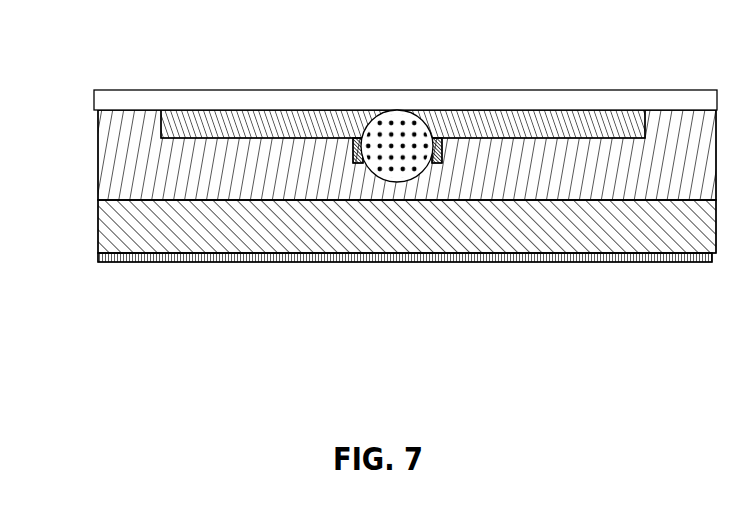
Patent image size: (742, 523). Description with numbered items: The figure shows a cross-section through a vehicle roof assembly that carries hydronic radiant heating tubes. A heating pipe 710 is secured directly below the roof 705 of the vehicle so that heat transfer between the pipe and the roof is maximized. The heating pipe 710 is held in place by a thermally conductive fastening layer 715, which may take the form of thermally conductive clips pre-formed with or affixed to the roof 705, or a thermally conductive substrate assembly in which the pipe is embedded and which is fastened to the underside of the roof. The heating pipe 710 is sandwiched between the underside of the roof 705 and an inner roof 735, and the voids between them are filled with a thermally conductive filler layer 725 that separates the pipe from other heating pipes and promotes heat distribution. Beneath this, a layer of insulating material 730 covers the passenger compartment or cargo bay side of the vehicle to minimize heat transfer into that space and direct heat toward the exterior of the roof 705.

The roof 705 is at (107, 90).
The heating pipe 710 is at (400, 111).
The thermally conductive fastening layer 715 is at (232, 109).
The thermally conductive filler layer 725 is at (98, 173).
The layer of insulating material 730 is at (99, 240).
The inner roof 735 is at (230, 263).